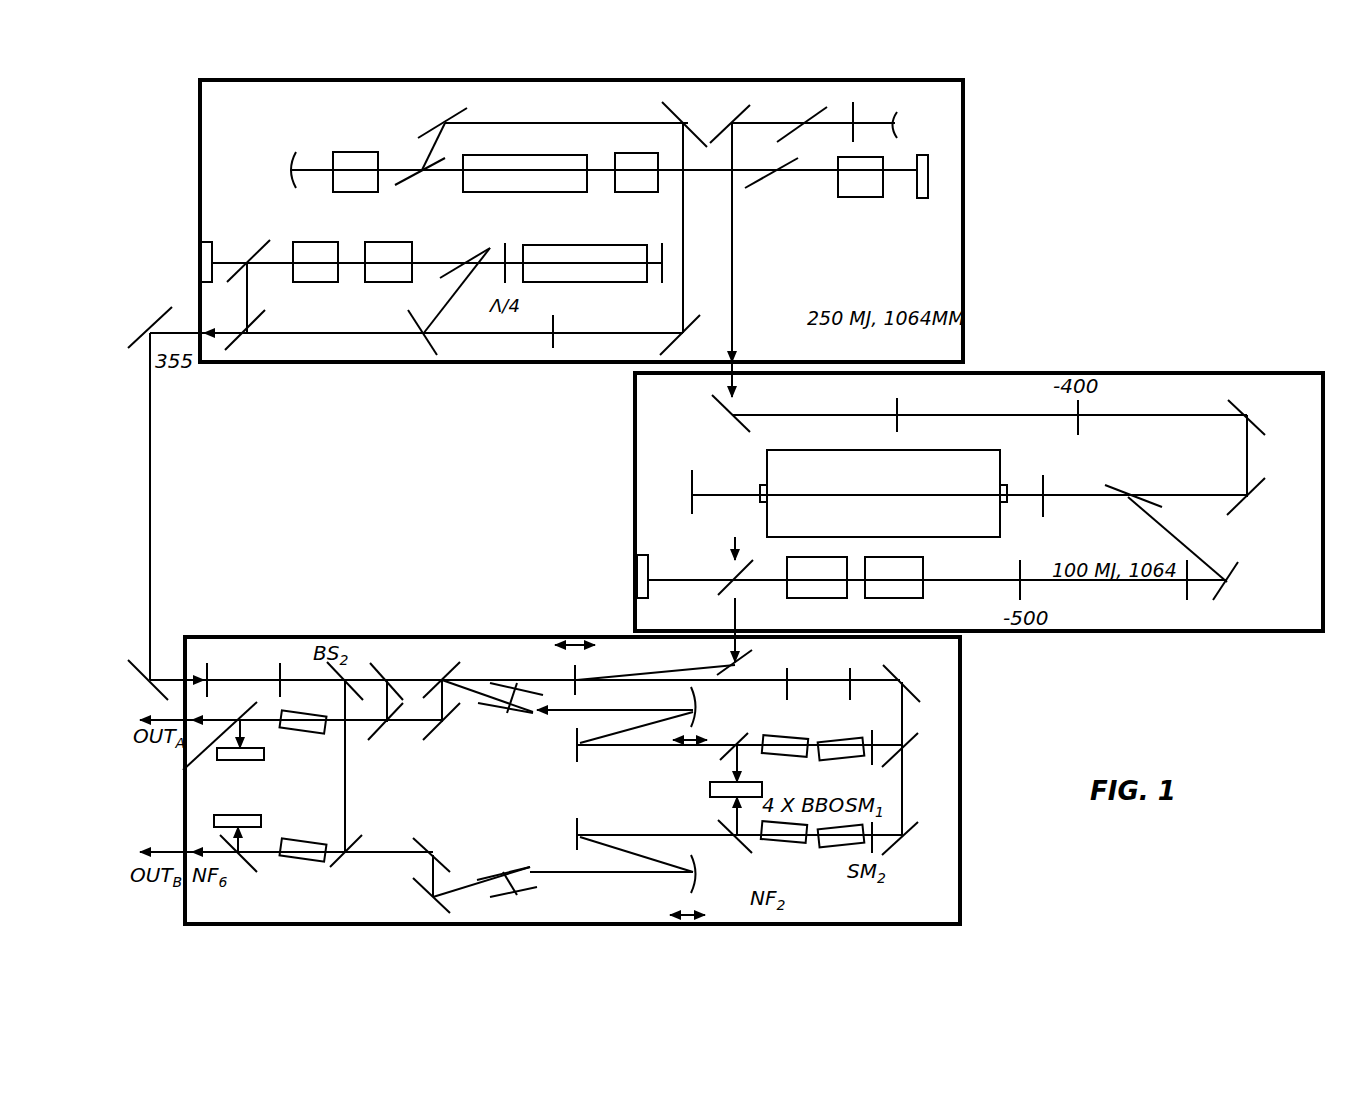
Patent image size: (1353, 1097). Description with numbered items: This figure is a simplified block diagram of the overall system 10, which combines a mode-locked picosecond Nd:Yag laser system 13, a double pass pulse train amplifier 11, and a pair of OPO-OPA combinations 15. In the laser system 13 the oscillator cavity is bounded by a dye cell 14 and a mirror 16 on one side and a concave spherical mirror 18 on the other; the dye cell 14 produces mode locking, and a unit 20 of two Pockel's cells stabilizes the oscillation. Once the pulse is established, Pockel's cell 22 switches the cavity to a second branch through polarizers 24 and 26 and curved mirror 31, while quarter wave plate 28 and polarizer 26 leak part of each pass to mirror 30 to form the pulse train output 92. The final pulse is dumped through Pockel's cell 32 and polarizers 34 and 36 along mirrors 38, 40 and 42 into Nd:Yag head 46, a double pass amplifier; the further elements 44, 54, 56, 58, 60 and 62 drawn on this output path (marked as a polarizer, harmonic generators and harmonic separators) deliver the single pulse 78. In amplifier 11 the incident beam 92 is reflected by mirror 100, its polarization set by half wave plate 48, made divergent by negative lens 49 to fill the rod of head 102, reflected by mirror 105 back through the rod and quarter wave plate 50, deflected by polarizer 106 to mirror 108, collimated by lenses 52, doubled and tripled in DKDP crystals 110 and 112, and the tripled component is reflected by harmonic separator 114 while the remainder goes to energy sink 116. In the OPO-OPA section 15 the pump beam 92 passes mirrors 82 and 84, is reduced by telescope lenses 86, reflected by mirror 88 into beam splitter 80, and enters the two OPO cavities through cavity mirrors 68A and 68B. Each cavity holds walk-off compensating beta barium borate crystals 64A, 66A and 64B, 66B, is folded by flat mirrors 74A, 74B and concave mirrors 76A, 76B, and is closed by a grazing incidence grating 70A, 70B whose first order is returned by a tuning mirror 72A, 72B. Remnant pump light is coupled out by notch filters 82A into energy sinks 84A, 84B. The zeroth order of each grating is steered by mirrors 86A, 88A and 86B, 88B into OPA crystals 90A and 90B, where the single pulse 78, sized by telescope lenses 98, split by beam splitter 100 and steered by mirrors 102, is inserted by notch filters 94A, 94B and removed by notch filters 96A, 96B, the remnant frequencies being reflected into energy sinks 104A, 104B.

The laser system 10 is at (313, 368).
The double pass amplifier 11 is at (1292, 627).
The mode-locked Nd:Yag laser system 13 is at (945, 352).
The dye cell 14 is at (939, 165).
The amplifier section 15 is at (953, 697).
The mirror 16 is at (919, 231).
The concave spherical mirror 18 is at (290, 155).
The Pockel's cell unit 20 is at (842, 191).
The Pockel's cell 22 is at (549, 170).
The polarizer 24 is at (770, 169).
The polarizer 26 is at (791, 113).
The quarter wave plate 28 is at (837, 124).
The mirror 30 is at (720, 113).
The curved mirror 31 is at (912, 111).
The Pockel's cell 32 is at (355, 174).
The polarizer 34 is at (422, 195).
The polarizer 36 is at (427, 111).
The mirror 38 is at (668, 112).
The mirror 40 is at (688, 341).
The mirror 42 is at (410, 336).
The polarizer P5 44 is at (453, 253).
The Nd:Yag head 46 is at (588, 266).
The half wave plate 48 is at (734, 373).
The negative lens 49 is at (1105, 414).
The quarter wave plate 50 is at (1062, 482).
The lenses 52 is at (915, 436).
The second harmonic generator SHG 54 is at (375, 287).
The third harmonic generator THG 56 is at (299, 275).
The harmonic separator HS 58 is at (246, 246).
The harmonic separator HS 60 is at (259, 336).
The output window / beam dump 62 is at (173, 264).
The BBO crystal 64A is at (787, 757).
The BBO crystal 64B is at (780, 843).
The BBO crystal 66A is at (843, 760).
The BBO crystal 66B is at (840, 845).
The cavity mirror 68A is at (875, 745).
The cavity mirror 68B is at (875, 832).
The grazing incidence grating 70A is at (492, 730).
The grazing incidence grating 70B is at (481, 871).
The tuning mirror 72A is at (498, 674).
The tuning mirror 72B is at (533, 896).
The flat folding mirror 74A is at (573, 750).
The flat folding mirror 74B is at (573, 830).
The concave mirror 76A is at (690, 700).
The concave mirror 76B is at (688, 885).
The single pulse 78 is at (158, 506).
The beam splitter 80 is at (906, 774).
The mirror 82 is at (747, 665).
The notch filter 82A is at (712, 790).
The mirror 84 is at (570, 664).
The energy sink 84A is at (712, 782).
The energy sink 84B is at (712, 800).
The telescope lenses 86 is at (815, 679).
The mirror 86A is at (427, 679).
The mirror 86B is at (430, 897).
The mirror 88 is at (900, 662).
The mirror 88A is at (455, 737).
The mirror 88B is at (450, 852).
The OPA crystal 90A is at (311, 733).
The OPA crystal 90B is at (311, 848).
The pulse train 92 is at (740, 340).
The notch filter 94A is at (395, 731).
The notch filter 94B is at (372, 850).
The notch filter 96A is at (185, 775).
The notch filter 96B is at (253, 868).
The telescope lenses 98 is at (275, 680).
The mirror / beam splitter 100 is at (706, 414).
The Nd:Yag head / mirrors 102 is at (883, 481).
The energy sink 104A is at (228, 757).
The energy sink 104B is at (268, 815).
The mirror 105 is at (726, 482).
The polarizer 106 is at (1151, 478).
The mirror 108 is at (1256, 583).
The DKDP crystal 110 is at (930, 585).
The DKDP crystal 112 is at (826, 579).
The harmonic separator 114 is at (730, 560).
The energy sink 116 is at (672, 562).